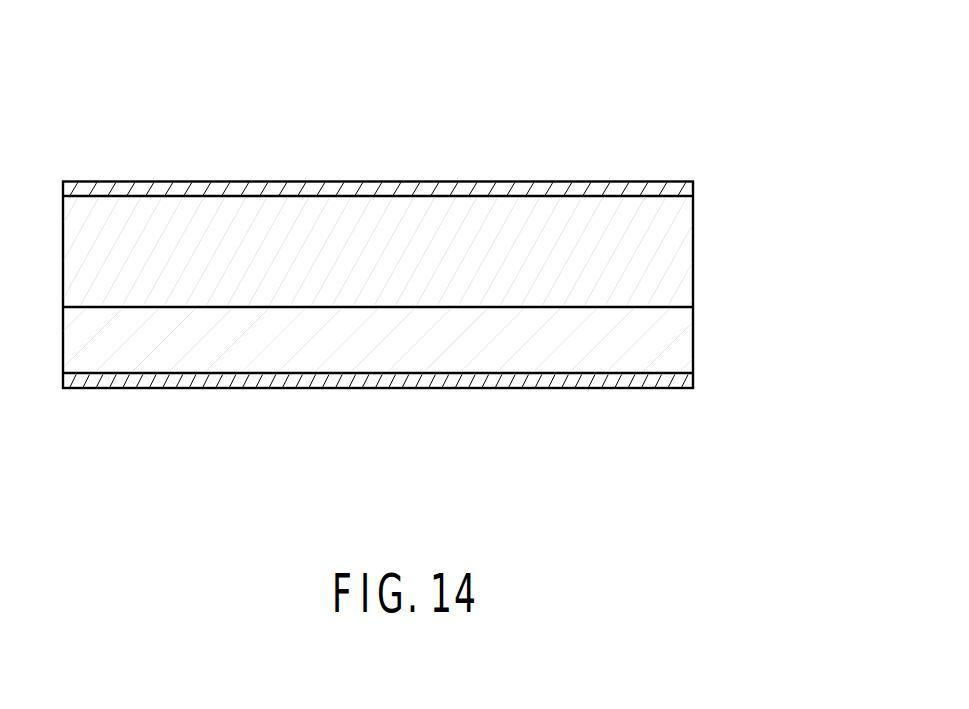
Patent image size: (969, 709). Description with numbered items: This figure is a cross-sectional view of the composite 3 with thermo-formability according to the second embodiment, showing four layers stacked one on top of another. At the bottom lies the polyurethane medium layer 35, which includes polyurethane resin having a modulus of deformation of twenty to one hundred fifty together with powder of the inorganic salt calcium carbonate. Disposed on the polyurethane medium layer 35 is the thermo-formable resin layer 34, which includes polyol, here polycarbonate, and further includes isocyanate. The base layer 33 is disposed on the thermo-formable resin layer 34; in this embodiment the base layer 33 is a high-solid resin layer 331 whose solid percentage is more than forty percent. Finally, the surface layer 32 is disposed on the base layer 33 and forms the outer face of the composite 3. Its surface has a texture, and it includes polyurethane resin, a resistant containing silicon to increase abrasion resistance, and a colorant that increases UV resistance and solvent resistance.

The composite 3 is at (714, 129).
The surface layer 32 is at (683, 188).
The base layer 33 is at (807, 267).
The high-solid resin layer 331 is at (683, 260).
The thermo-formable resin layer 34 is at (683, 335).
The polyurethane medium layer 35 is at (683, 380).